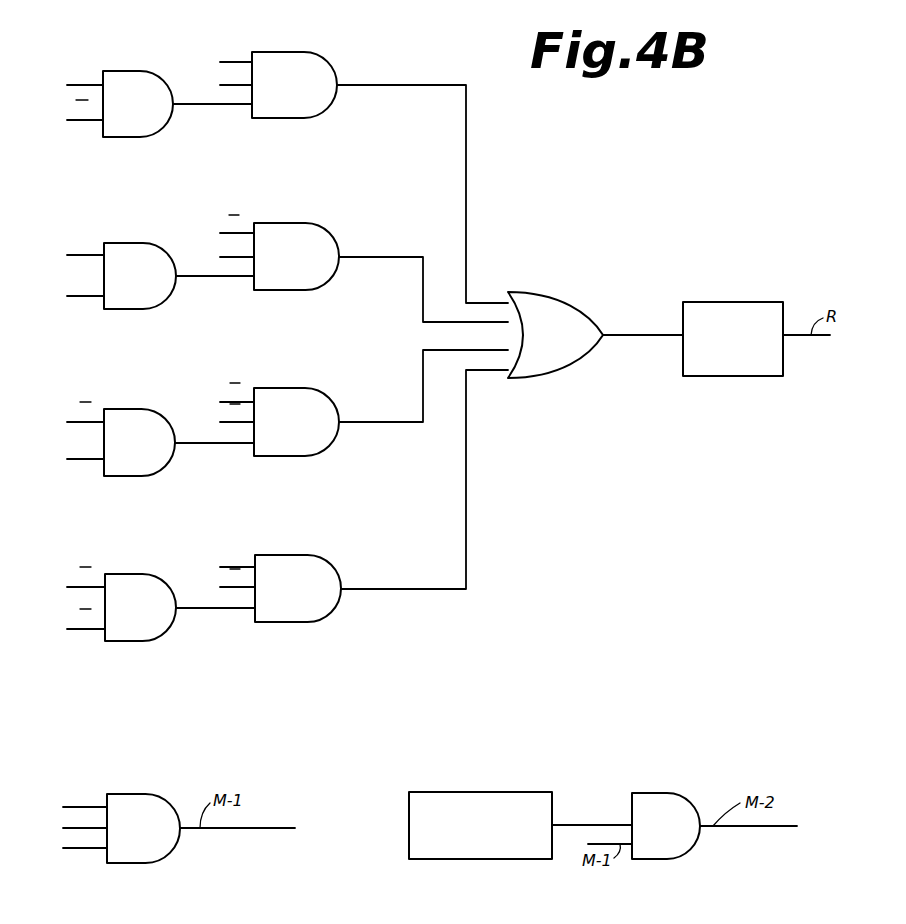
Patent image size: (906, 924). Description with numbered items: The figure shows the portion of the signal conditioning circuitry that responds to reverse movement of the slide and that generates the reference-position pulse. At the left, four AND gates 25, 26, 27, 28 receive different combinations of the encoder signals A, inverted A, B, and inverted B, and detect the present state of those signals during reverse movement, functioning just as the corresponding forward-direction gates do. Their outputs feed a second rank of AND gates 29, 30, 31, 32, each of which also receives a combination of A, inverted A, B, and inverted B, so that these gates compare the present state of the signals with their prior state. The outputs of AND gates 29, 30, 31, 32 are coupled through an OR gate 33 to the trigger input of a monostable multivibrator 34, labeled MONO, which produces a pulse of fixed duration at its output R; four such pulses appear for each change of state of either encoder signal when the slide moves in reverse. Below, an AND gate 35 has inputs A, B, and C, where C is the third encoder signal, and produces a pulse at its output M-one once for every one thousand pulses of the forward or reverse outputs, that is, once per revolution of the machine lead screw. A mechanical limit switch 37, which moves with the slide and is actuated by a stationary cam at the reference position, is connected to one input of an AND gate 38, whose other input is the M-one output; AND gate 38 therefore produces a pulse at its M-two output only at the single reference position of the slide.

The AND gate 25 is at (164, 52).
The AND gate 26 is at (139, 243).
The AND gate 27 is at (142, 409).
The AND gate 28 is at (146, 574).
The AND gate 29 is at (304, 52).
The AND gate 30 is at (312, 224).
The AND gate 31 is at (316, 390).
The AND gate 32 is at (322, 556).
The OR gate 33 is at (573, 311).
The monostable multivibrator 34 is at (775, 290).
The AND gate 35 is at (150, 794).
The mechanical limit switch 37 is at (485, 792).
The AND gate 38 is at (645, 793).